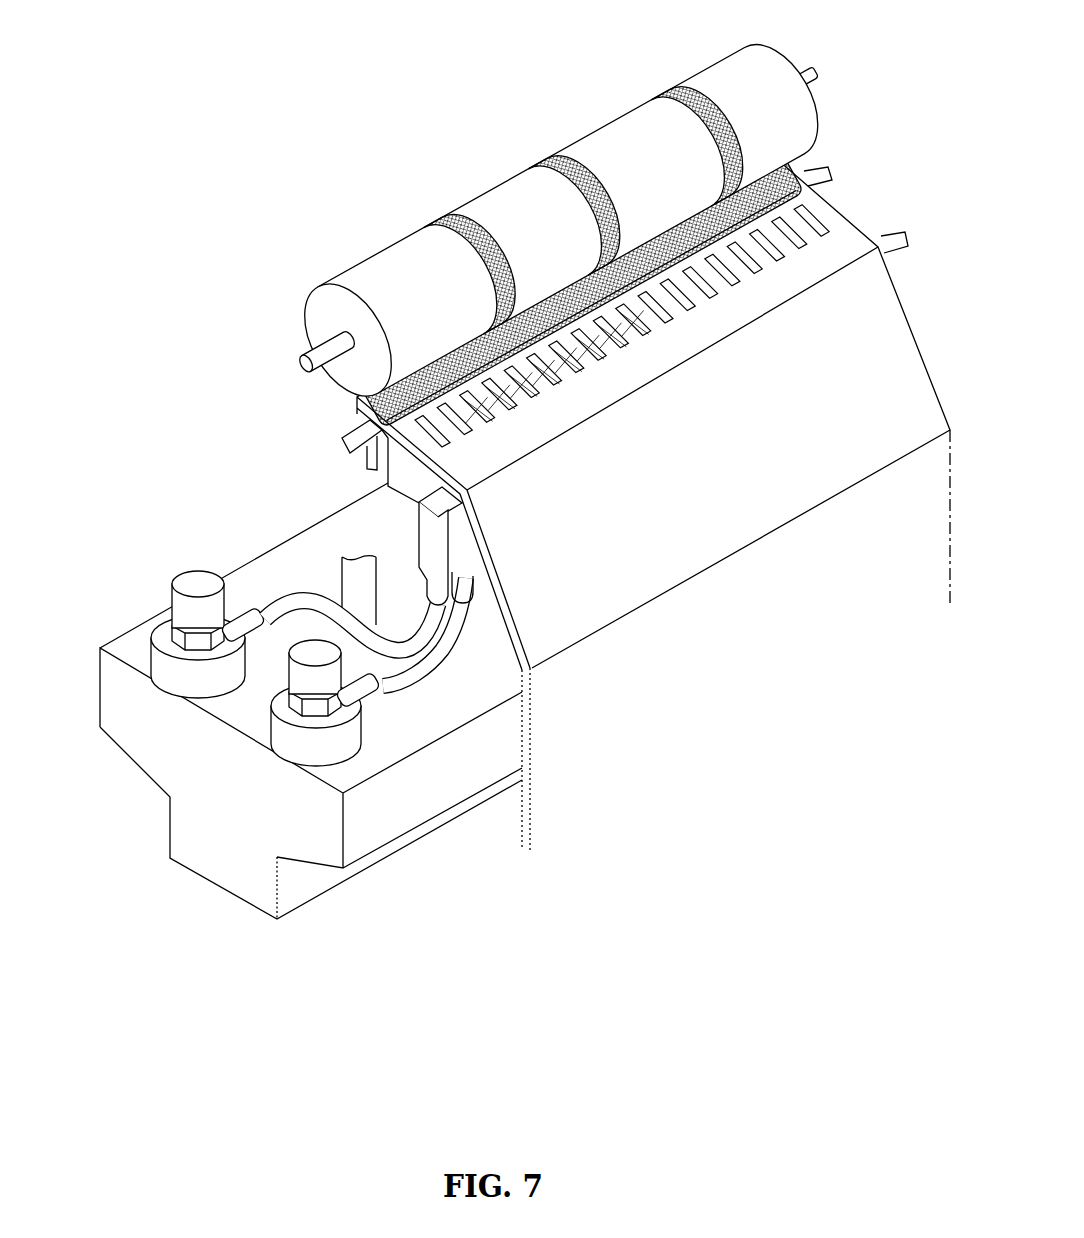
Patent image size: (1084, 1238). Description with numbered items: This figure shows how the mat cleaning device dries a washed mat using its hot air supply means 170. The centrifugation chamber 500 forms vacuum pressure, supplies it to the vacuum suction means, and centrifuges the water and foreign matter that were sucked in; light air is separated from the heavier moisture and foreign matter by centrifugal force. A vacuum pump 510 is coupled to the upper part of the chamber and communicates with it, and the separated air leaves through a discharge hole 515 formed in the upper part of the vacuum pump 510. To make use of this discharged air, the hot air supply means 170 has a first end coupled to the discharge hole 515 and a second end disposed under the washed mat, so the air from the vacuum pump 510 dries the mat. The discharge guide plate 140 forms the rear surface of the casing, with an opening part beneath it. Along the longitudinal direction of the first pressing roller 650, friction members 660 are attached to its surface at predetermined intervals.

The discharge guide plate 140 is at (637, 518).
The hot air supply means 170 is at (415, 497).
The centrifugation chamber 500 is at (238, 518).
The vacuum pump 510 is at (202, 680).
The discharge hole 515 is at (272, 756).
The first pressing roller 650 is at (501, 212).
The friction members 660 is at (565, 146).